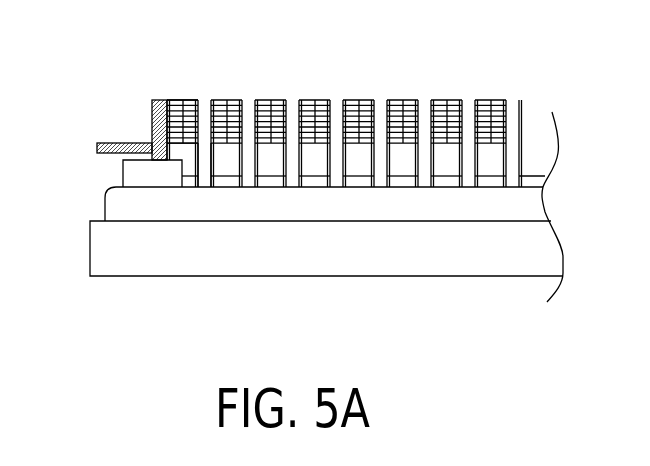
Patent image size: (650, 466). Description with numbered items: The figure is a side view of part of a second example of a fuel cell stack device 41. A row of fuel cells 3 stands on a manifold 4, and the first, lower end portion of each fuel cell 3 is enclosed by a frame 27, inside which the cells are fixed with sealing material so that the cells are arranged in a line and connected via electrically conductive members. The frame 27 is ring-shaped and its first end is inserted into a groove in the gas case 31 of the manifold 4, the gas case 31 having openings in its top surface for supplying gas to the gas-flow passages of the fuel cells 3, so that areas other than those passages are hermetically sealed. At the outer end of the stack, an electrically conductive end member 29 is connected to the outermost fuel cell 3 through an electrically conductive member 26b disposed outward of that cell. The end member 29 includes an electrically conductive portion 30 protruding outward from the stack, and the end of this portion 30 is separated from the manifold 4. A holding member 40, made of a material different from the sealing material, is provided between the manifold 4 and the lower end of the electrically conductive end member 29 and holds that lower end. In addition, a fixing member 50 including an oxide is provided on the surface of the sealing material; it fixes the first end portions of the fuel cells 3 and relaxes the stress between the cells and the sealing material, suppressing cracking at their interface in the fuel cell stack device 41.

The fuel cell 3 is at (248, 110).
The manifold 4 is at (135, 288).
The electrically conductive member 26b is at (178, 103).
The frame 27 is at (422, 205).
The electrically conductive end member 29 is at (152, 113).
The electrically conductive portion 30 is at (98, 147).
The gas case 31 is at (183, 265).
The holding member 40 is at (138, 173).
The fuel cell stack device 41 is at (447, 68).
The fixing member 50 is at (313, 178).